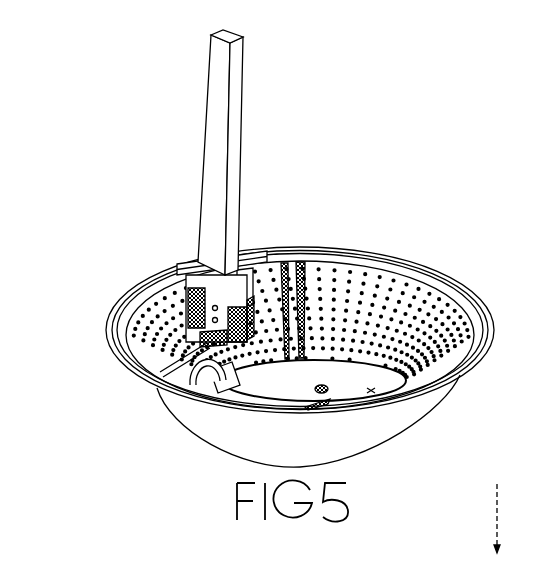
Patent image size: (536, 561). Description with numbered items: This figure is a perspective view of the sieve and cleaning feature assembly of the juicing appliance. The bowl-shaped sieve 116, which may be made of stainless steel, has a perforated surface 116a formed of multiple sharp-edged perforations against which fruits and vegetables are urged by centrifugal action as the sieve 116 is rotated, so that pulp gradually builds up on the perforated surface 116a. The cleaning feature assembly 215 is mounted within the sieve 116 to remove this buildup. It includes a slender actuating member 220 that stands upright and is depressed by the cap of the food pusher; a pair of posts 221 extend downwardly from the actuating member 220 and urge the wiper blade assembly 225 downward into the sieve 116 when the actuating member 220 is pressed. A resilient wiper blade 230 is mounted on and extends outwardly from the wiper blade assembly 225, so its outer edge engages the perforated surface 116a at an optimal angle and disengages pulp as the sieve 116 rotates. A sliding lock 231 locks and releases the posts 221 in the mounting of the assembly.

The sieve 116 is at (452, 280).
The perforated surface 116a is at (378, 262).
The cleaning feature assembly 215 is at (165, 300).
The actuating member 220 is at (238, 85).
The posts 221 is at (258, 252).
The wiper blade assembly 225 is at (305, 262).
The wiper blade 230 is at (188, 395).
The sliding lock 231 is at (155, 357).